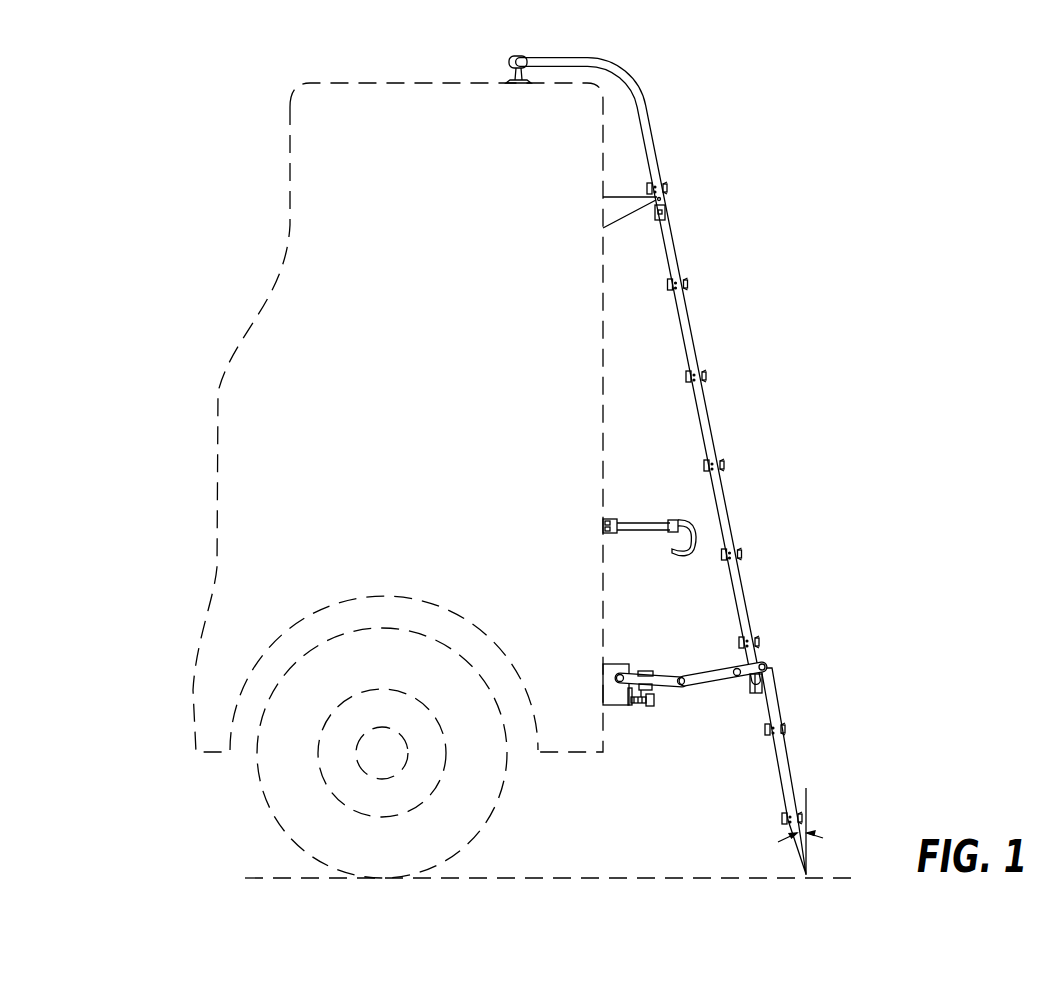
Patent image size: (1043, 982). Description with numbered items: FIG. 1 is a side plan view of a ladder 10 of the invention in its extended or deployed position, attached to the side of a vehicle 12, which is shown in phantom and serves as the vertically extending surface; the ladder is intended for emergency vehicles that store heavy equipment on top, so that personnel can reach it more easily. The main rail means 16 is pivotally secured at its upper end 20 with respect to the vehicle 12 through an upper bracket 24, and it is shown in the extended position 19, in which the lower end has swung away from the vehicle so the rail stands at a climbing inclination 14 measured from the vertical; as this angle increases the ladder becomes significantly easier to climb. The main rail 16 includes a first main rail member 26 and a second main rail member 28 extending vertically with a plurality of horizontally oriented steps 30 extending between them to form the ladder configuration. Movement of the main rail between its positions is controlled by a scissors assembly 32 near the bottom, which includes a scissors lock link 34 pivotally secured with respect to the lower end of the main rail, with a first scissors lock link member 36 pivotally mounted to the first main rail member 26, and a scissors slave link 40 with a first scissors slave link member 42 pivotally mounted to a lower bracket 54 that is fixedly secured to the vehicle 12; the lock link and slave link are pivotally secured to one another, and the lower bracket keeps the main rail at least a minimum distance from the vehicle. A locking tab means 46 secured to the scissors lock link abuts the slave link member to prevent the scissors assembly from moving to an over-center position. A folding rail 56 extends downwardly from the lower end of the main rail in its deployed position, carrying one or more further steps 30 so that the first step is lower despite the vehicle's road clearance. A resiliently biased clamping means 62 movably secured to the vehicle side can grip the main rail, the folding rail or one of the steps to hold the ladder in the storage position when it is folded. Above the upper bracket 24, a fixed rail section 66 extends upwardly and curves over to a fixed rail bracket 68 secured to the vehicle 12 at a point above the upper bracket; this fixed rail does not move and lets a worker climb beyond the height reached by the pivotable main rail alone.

The ladder 10 is at (655, 145).
The vehicle 12 is at (292, 245).
The climbing inclination 14 is at (803, 830).
The main rail means 16 is at (692, 342).
The extended position 19 is at (718, 756).
The upper end 20 is at (669, 226).
The upper bracket 24 is at (608, 207).
The first main rail member 26 is at (709, 420).
The second main rail member 28 is at (748, 613).
The steps 30 is at (687, 281).
The scissors assembly 32 is at (690, 687).
The scissors lock link 34 is at (715, 670).
The first scissors lock link member 36 is at (726, 682).
The scissors slave link 40 is at (632, 672).
The first scissors slave link member 42 is at (662, 673).
The locking tab means 46 is at (645, 670).
The lower bracket 54 is at (609, 692).
The folding rail 56 is at (787, 760).
The resiliently biased clamping means 62 is at (653, 523).
The fixed rail section 66 is at (640, 92).
The fixed rail bracket 68 is at (510, 74).